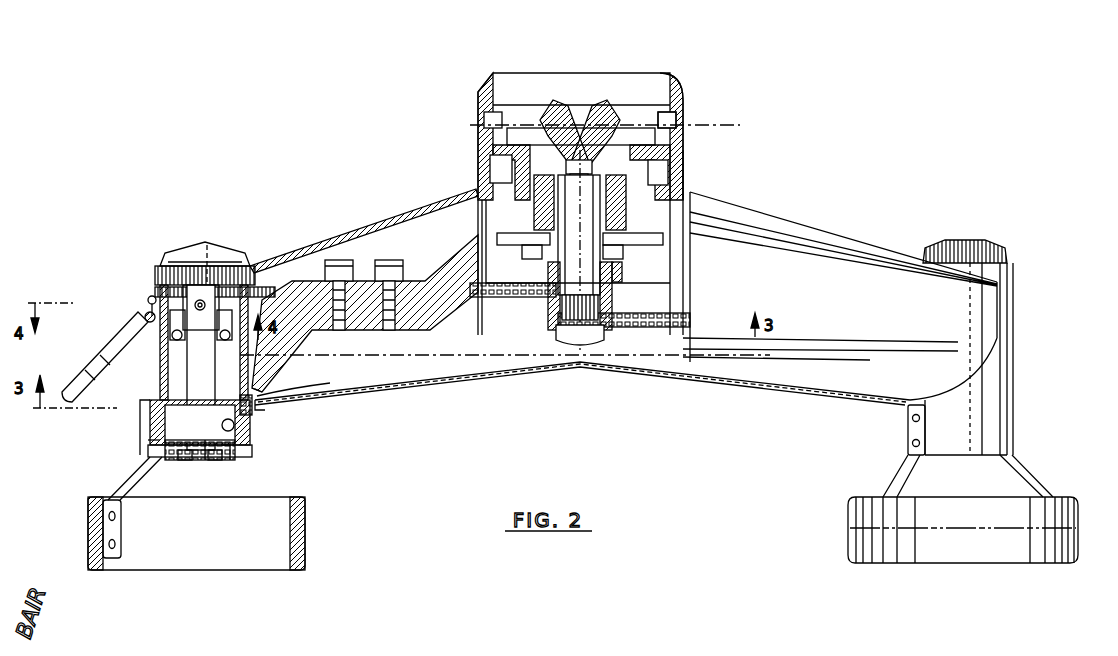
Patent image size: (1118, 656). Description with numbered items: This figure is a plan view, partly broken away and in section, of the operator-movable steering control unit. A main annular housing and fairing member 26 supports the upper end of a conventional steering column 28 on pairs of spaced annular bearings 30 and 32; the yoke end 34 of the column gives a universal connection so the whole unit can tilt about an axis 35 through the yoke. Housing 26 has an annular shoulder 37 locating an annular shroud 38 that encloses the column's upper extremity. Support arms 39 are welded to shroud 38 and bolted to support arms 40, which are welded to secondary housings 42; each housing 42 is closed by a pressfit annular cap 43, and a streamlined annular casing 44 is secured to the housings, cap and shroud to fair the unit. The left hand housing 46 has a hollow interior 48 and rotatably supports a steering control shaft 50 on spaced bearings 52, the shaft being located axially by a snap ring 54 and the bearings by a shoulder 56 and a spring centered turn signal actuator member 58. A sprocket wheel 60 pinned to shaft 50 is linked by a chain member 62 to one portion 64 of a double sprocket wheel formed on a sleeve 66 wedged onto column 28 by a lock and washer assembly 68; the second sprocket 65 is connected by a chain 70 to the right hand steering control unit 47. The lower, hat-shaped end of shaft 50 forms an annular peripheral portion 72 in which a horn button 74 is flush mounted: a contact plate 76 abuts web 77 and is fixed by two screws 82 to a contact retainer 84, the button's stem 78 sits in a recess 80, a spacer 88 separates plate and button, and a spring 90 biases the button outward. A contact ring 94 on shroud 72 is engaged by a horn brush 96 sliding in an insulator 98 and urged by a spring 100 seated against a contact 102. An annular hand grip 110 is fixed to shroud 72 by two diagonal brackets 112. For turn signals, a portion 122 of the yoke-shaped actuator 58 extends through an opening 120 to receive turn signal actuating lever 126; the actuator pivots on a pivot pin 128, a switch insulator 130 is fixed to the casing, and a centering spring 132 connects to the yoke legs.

The main annular housing and fairing member 26 is at (677, 96).
The yoke end 34 is at (568, 110).
The axis 35 is at (700, 126).
The support arms 40 is at (484, 124).
The annular bearing 30 is at (574, 157).
The annular shoulder 37 is at (688, 127).
The annular shroud 38 is at (688, 166).
The streamlined annular casing 44 is at (341, 221).
The support arms 39 is at (440, 265).
The annular bearing 32 is at (602, 216).
The steering column 28 is at (572, 251).
The sprocket portion 64 is at (616, 282).
The chain member 62 is at (484, 298).
The chain 70 is at (640, 314).
The sleeve 66 is at (552, 326).
The second sprocket 65 is at (610, 326).
The lock and washer assembly 68 is at (608, 345).
The annular cap 43 is at (175, 262).
The turn signal lever centering spring 132 is at (207, 245).
The sprocket wheel 60 is at (232, 264).
The turn signal actuator member 58 is at (158, 266).
The opening 120 is at (150, 298).
The actuator portion 122 is at (150, 310).
The pivot pin 128 is at (146, 318).
The secondary housing 42 is at (131, 328).
The turn signal actuating lever 126 is at (83, 378).
The shoulder 56 is at (168, 339).
The snap ring 54 is at (201, 325).
The bearings 52 is at (224, 340).
The switch insulator 130 is at (282, 345).
The contact 102 is at (258, 380).
The spring 100 is at (272, 393).
The left hand housing 46 is at (160, 370).
The hollow interior 48 is at (160, 385).
The recess 80 is at (166, 403).
The steering control shaft 50 is at (199, 367).
The insulator 98 is at (330, 394).
The horn brush 96 is at (284, 405).
The spring 90 is at (250, 412).
The annular contact ring 94 is at (140, 410).
The annular peripheral portion 72 is at (250, 432).
The web 77 is at (150, 438).
The screws 82 is at (252, 455).
The contact plate 76 is at (170, 460).
The stem 78 is at (205, 460).
The spacer 88 is at (226, 460).
The contact retainer 84 is at (183, 462).
The horn button 74 is at (216, 462).
The brackets 112 is at (133, 490).
The hand grip 110 is at (258, 556).
The right hand steering control unit 47 is at (1015, 382).